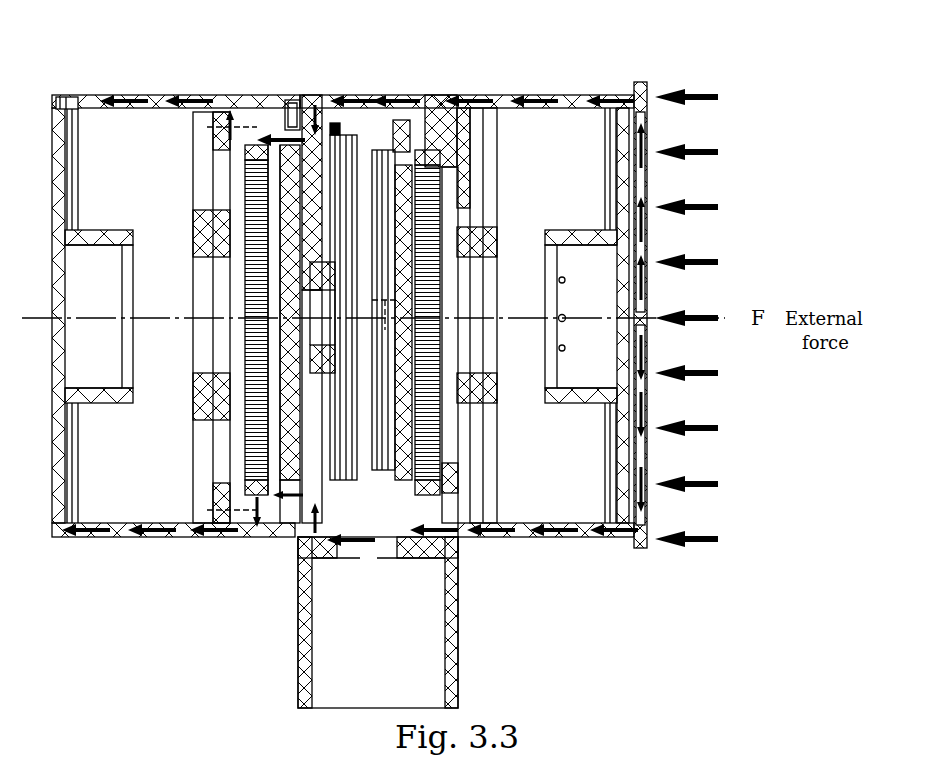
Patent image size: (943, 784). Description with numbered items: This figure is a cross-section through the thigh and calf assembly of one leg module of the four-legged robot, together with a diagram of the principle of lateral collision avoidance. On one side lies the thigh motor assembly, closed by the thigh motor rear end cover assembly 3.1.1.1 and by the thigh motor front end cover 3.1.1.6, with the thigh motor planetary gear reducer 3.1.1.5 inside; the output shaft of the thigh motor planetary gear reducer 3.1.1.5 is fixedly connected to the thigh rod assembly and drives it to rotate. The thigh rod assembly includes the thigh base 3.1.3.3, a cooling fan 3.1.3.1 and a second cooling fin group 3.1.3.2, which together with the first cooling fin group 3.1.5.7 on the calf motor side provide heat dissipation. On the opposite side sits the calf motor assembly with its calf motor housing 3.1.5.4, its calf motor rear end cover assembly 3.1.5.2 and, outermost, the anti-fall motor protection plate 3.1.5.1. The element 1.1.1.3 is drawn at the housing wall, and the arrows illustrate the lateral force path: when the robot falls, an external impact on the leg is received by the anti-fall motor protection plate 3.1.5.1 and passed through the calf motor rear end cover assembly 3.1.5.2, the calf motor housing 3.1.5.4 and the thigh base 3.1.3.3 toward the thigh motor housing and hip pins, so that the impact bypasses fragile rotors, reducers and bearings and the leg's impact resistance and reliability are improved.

The thigh motor rear end cover assembly 3.1.1.1 is at (62, 130).
The top housing wall segment 1.1.1.3 is at (93, 98).
The thigh motor planetary gear reducer 3.1.1.5 is at (255, 157).
The thigh motor front end cover 3.1.1.6 is at (283, 177).
The second cooling fin group 3.1.3.2 is at (295, 118).
The cooling fan 3.1.3.1 is at (332, 128).
The thigh base 3.1.3.3 is at (430, 100).
The first cooling fin group 3.1.5.7 is at (403, 137).
The calf motor housing 3.1.5.4 is at (573, 102).
The calf motor rear end cover assembly 3.1.5.2 is at (625, 155).
The anti-fall motor protection plate 3.1.5.1 is at (642, 545).